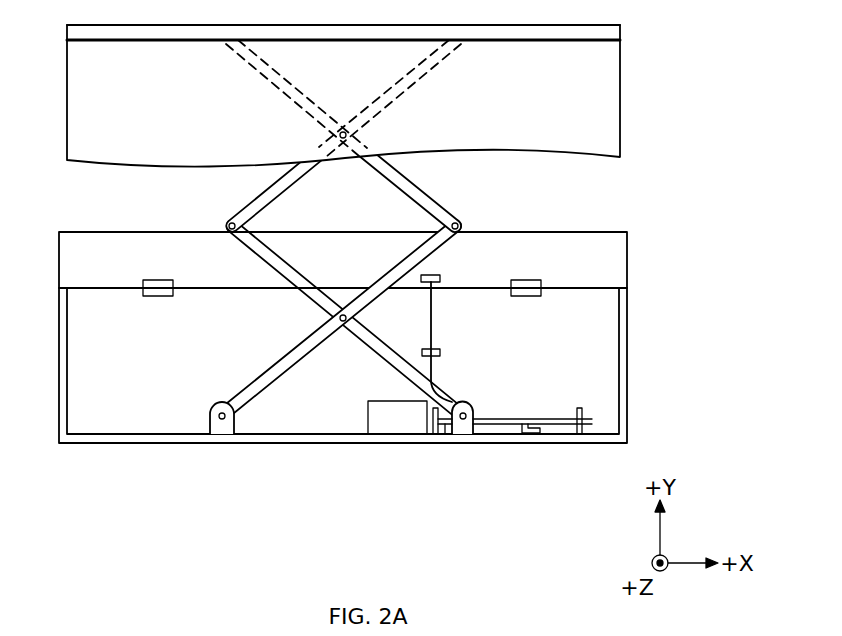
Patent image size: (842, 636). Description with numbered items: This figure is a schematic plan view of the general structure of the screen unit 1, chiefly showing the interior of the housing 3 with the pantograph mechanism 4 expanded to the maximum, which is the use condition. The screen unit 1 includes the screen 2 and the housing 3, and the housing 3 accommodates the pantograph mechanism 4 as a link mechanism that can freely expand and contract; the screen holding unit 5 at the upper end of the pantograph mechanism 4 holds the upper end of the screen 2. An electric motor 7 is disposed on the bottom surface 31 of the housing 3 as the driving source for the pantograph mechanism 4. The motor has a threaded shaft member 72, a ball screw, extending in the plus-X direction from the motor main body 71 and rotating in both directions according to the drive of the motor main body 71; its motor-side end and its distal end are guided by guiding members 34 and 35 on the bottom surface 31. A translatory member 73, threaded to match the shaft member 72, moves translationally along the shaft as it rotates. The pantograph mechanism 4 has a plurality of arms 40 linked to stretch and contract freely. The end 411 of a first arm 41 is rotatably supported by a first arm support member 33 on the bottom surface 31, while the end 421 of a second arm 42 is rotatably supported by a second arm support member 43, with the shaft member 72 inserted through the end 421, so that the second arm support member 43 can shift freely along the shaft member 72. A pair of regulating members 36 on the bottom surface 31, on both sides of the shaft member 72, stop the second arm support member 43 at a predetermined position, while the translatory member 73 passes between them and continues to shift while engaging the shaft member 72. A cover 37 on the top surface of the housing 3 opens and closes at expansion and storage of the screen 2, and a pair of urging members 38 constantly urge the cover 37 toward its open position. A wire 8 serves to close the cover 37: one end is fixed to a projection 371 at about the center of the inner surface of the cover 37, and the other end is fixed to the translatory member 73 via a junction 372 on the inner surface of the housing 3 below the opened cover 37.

The screen unit 1 is at (677, 182).
The screen 2 is at (393, 96).
The screen holding unit 5 is at (612, 30).
The housing 3 is at (384, 368).
The bottom surface 31 is at (118, 433).
The first arm support member 33 is at (208, 432).
The guiding member 34 is at (447, 428).
The guiding member 35 is at (590, 427).
The regulating member 36 is at (532, 434).
The cover 37 is at (630, 255).
The projection 371 is at (433, 275).
The junction 372 is at (436, 349).
The urging member 38 is at (152, 280).
The pantograph mechanism 4 is at (353, 275).
The arms 40 is at (466, 201).
The first arm 41 is at (298, 344).
The end of first arm 411 is at (209, 426).
The second arm 42 is at (370, 350).
The end of second arm 421 is at (491, 435).
The second arm support member 43 is at (463, 434).
The electric motor 7 is at (375, 434).
The motor main body 71 is at (410, 434).
The shaft member 72 is at (563, 418).
The translatory member 73 is at (480, 426).
The wire 8 is at (434, 302).